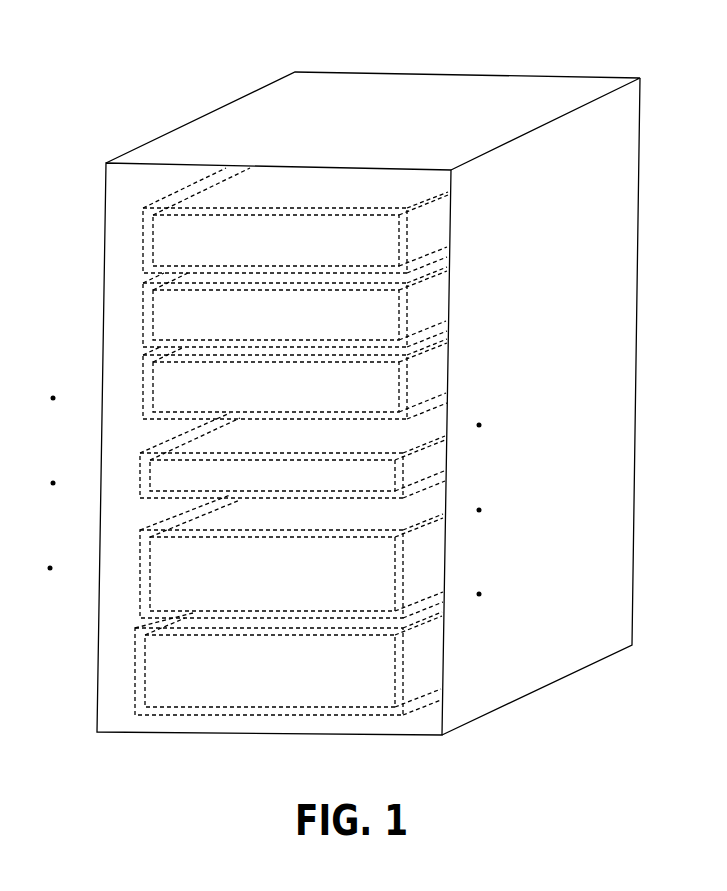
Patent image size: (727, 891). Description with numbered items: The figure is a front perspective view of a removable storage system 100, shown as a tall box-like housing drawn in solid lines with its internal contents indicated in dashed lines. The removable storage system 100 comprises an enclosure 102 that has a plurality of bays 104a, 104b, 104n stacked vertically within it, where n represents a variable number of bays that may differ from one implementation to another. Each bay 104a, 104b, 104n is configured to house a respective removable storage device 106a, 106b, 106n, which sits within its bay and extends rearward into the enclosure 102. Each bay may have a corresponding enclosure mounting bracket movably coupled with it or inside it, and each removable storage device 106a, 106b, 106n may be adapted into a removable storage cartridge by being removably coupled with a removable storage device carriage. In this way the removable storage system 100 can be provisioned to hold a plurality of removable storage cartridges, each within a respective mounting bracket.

The removable storage system 100 is at (160, 66).
The enclosure 102 is at (433, 90).
The bay 104a is at (143, 234).
The bay 104b is at (143, 310).
The bay 104n is at (135, 656).
The removable storage device 106a is at (430, 231).
The removable storage device 106b is at (430, 303).
The removable storage device 106n is at (427, 650).